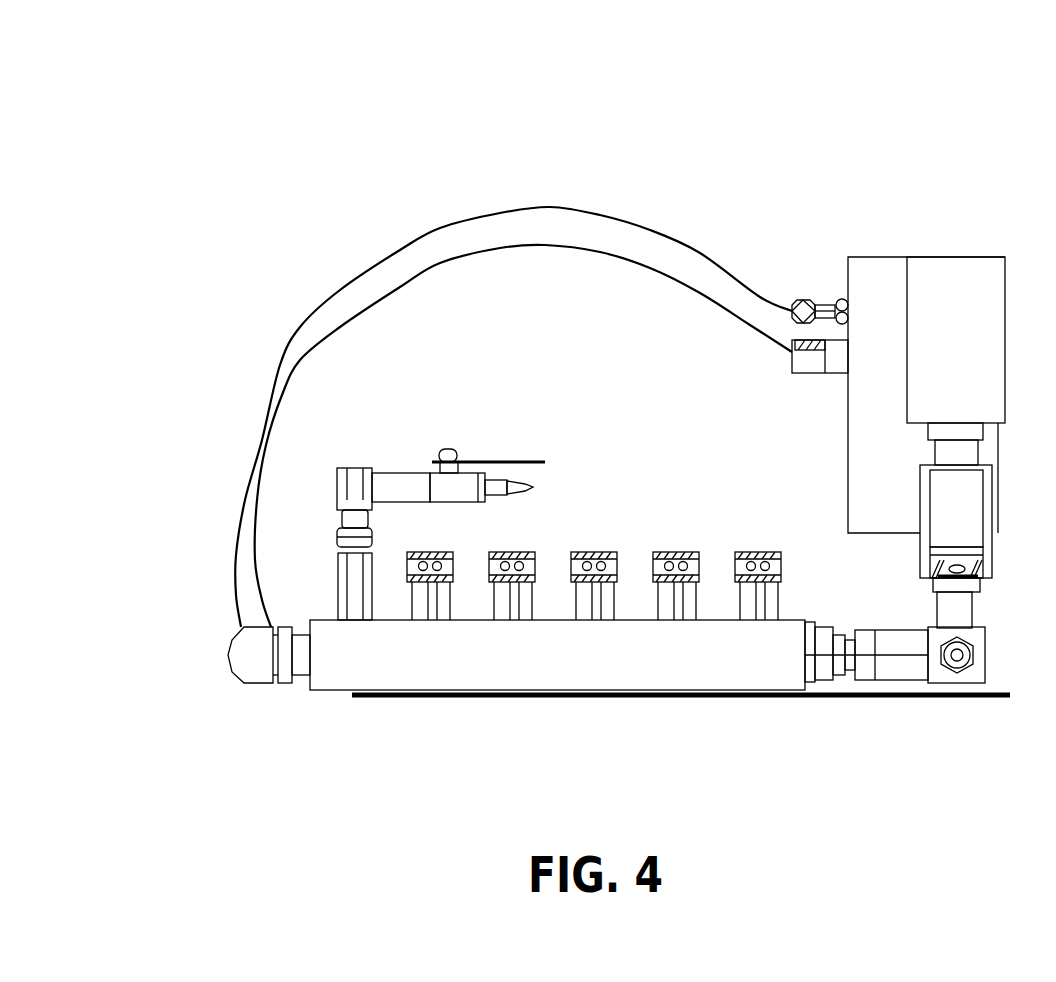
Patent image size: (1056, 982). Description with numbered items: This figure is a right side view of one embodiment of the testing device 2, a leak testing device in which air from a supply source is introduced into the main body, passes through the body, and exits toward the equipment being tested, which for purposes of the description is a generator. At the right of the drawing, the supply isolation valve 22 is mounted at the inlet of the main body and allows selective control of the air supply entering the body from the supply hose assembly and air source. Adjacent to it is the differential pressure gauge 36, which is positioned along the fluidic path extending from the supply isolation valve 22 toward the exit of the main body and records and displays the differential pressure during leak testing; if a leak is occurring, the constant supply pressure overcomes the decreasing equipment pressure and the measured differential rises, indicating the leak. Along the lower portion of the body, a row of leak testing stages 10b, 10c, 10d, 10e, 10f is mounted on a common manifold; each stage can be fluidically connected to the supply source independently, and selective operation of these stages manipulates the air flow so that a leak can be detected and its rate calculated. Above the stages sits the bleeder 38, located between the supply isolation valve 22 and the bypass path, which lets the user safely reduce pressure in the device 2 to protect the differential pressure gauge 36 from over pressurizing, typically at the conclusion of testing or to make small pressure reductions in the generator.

The device 2 is at (250, 285).
The differential pressure gauge 36 is at (868, 257).
The supply isolation valve 22 is at (964, 283).
The bleeder 38 is at (457, 450).
The leak testing stage 10b is at (757, 568).
The leak testing stage 10c is at (676, 571).
The leak testing stage 10d is at (594, 571).
The leak testing stage 10e is at (512, 571).
The leak testing stage 10f is at (430, 572).